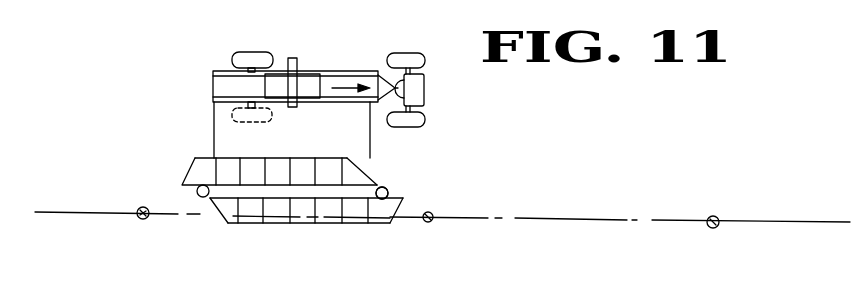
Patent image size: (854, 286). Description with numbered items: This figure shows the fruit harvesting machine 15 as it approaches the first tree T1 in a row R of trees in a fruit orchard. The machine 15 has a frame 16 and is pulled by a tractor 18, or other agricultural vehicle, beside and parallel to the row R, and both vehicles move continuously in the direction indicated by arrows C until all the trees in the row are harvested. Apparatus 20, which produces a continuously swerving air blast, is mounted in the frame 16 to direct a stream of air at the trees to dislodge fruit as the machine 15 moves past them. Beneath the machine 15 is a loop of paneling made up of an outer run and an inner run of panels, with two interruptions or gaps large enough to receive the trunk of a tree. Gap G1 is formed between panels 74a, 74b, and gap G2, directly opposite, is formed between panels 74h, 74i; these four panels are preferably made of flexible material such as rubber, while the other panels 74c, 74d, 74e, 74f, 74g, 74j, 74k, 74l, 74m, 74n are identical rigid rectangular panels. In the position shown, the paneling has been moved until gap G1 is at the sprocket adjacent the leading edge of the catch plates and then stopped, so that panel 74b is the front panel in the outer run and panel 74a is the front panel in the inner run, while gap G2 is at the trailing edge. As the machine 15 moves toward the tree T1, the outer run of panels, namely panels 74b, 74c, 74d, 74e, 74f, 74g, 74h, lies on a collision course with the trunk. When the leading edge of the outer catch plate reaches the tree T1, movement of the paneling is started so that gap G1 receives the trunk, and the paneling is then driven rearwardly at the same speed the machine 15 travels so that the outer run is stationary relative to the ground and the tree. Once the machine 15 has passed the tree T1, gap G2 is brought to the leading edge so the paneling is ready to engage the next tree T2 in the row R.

The machine 15 is at (323, 57).
The frame 16 is at (367, 74).
The tractor 18 is at (428, 88).
The apparatus to produce a continuously swerving air blast 20 is at (292, 56).
The arrows indicating direction of movement C is at (340, 83).
The panel 74a is at (358, 173).
The panel 74b is at (380, 223).
The panel 74c is at (358, 223).
The panel 74d is at (323, 222).
The panel 74e is at (302, 222).
The panel 74f is at (275, 222).
The panel 74g is at (248, 222).
The panel 74h is at (228, 222).
The panel 74i is at (188, 173).
The panel 74j is at (220, 157).
The panel 74k is at (244, 147).
The panel 74l is at (277, 162).
The panel 74m is at (303, 162).
The panel 74n is at (330, 163).
The gap G1 is at (398, 200).
The gap G2 is at (212, 207).
The row of trees R is at (88, 212).
The tree T1 is at (433, 214).
The tree T2 is at (710, 218).